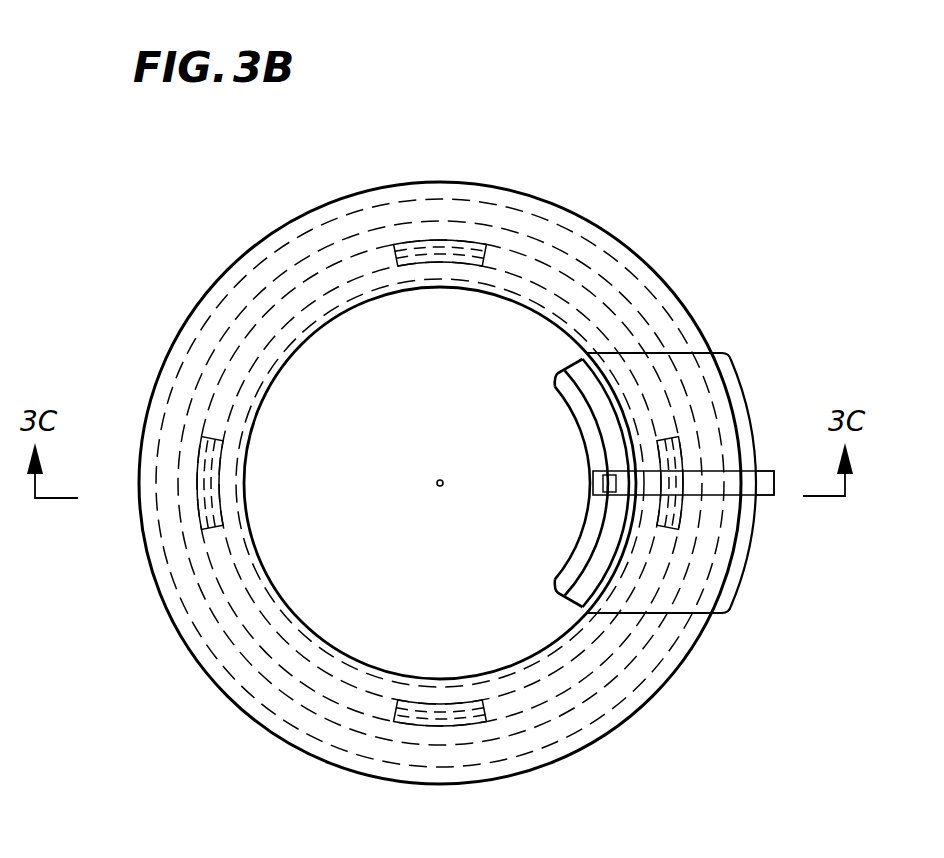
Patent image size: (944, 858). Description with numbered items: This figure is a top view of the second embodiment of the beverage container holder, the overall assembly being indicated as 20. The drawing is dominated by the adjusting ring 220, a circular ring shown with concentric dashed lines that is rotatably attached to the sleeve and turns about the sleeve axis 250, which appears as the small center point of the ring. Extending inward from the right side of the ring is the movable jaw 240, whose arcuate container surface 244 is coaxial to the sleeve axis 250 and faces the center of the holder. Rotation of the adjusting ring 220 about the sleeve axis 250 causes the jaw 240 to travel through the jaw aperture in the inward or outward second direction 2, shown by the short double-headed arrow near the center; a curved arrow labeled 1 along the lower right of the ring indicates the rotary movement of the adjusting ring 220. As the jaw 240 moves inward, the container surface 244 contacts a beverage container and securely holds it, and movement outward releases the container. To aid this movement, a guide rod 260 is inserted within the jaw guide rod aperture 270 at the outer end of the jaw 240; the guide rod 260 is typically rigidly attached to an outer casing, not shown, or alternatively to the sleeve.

The ring assembly 20 is at (674, 128).
The adjusting ring 220 is at (528, 226).
The movable jaw 240 is at (747, 373).
The container surface 244 is at (573, 412).
The sleeve axis 250 is at (443, 486).
The guide rod 260 is at (767, 494).
The jaw guide rod aperture 270 is at (755, 528).
The circumferential direction 1 is at (707, 697).
The second direction 2 is at (568, 483).